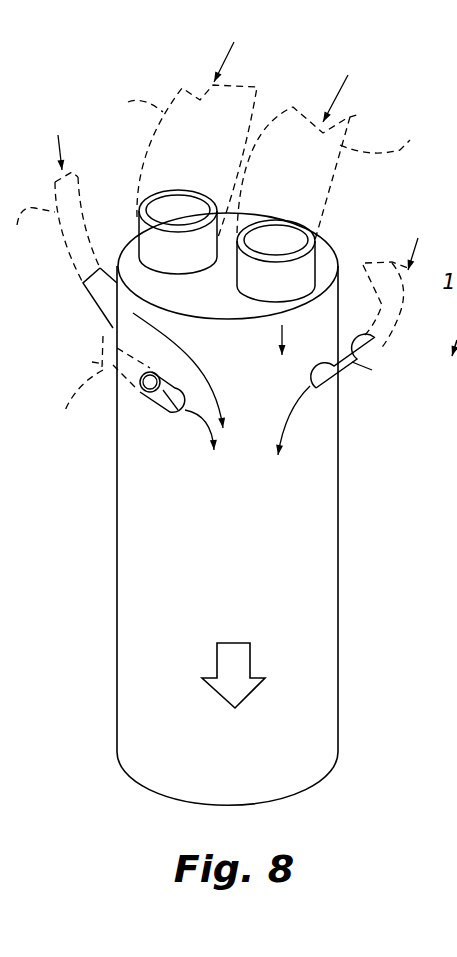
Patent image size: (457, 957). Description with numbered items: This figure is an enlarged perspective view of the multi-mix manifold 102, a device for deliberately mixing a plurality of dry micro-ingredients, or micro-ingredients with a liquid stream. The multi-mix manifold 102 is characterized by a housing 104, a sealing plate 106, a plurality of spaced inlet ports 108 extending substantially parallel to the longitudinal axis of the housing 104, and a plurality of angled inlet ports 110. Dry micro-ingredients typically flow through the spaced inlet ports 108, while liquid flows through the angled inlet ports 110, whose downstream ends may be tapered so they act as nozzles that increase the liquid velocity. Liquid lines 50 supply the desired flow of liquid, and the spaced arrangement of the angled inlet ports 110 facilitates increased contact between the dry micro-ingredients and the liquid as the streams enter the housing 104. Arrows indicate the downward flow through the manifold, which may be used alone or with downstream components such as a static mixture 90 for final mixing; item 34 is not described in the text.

The flexible hose 34 is at (240, 156).
The liquid line 50 is at (207, 311).
The static mixture 90 is at (3, 777).
The multi-mix manifold 102 is at (380, 598).
The housing 104 is at (202, 592).
The sealing plate 106 is at (170, 317).
The spaced inlet port 108 is at (150, 247).
The angled inlet port 110 is at (100, 288).